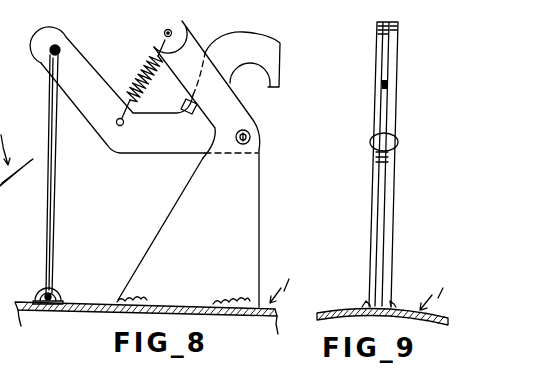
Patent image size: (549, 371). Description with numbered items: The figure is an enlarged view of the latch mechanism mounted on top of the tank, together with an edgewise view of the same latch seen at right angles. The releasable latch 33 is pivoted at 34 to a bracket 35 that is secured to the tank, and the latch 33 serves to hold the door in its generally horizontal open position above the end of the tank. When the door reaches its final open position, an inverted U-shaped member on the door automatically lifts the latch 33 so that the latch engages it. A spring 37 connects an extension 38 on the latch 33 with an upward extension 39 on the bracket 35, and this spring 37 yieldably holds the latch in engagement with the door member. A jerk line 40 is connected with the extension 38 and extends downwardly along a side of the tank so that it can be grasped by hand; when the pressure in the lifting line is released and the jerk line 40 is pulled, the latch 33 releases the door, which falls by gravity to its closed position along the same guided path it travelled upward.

In FIG. 8, the releasable latch 33 is at (257, 38).
In FIG. 9, the releasable latch 33 is at (387, 60).
In FIG. 8, the pivot 34 is at (256, 128).
In FIG. 8, the bracket 35 is at (253, 170).
In FIG. 9, the bracket 35 is at (378, 127).
In FIG. 8, the spring 37 is at (140, 80).
In FIG. 8, the extension 38 is at (101, 141).
In FIG. 8, the upward extension 39 is at (190, 33).
In FIG. 8, the jerk line 40 is at (56, 205).